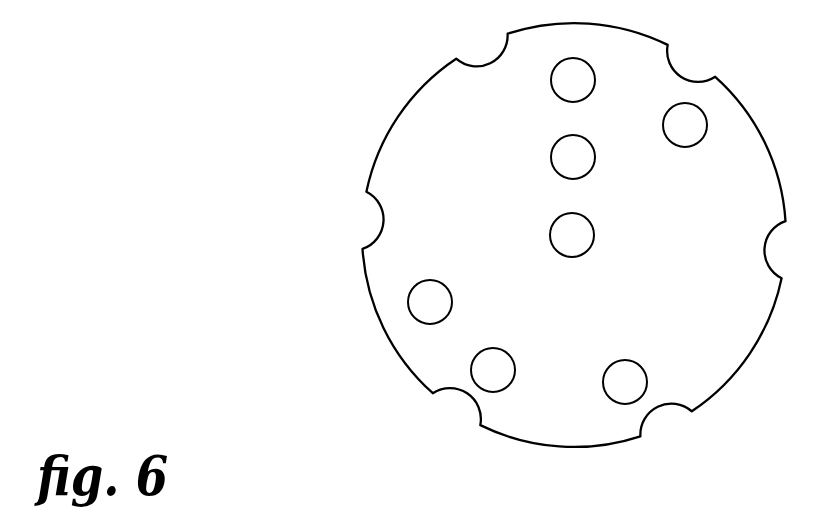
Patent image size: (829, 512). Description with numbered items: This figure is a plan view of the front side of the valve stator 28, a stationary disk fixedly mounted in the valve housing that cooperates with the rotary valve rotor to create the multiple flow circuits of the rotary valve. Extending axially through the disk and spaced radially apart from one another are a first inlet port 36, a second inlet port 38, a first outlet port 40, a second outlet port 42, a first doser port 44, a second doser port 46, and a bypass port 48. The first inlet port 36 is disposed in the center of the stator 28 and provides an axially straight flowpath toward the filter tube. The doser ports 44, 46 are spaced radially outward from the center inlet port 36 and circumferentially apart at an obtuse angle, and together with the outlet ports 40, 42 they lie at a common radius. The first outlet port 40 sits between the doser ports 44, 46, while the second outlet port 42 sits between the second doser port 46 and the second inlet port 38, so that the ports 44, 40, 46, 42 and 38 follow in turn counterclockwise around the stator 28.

The valve stator 28 is at (440, 84).
The second inlet port 38 is at (551, 82).
The bypass port 48 is at (551, 155).
The first inlet port 36 is at (552, 223).
The second outlet port 42 is at (692, 147).
The first doser port 44 is at (452, 298).
The first outlet port 40 is at (513, 358).
The second doser port 46 is at (638, 362).